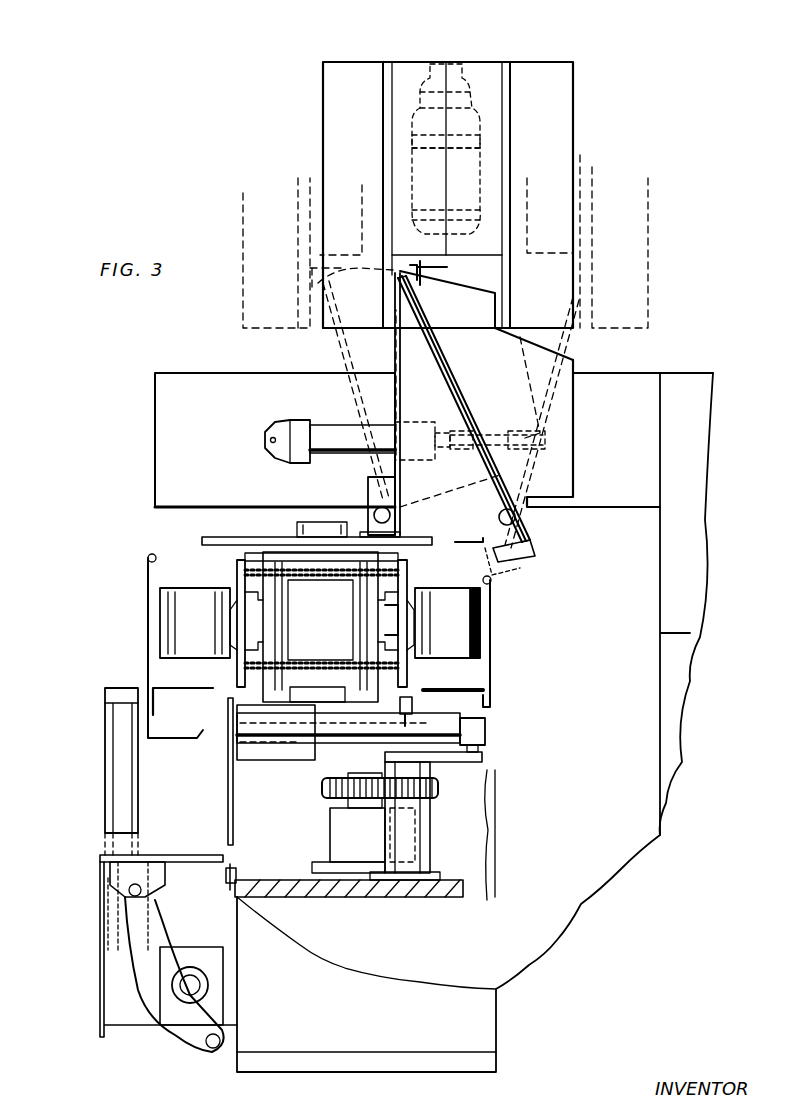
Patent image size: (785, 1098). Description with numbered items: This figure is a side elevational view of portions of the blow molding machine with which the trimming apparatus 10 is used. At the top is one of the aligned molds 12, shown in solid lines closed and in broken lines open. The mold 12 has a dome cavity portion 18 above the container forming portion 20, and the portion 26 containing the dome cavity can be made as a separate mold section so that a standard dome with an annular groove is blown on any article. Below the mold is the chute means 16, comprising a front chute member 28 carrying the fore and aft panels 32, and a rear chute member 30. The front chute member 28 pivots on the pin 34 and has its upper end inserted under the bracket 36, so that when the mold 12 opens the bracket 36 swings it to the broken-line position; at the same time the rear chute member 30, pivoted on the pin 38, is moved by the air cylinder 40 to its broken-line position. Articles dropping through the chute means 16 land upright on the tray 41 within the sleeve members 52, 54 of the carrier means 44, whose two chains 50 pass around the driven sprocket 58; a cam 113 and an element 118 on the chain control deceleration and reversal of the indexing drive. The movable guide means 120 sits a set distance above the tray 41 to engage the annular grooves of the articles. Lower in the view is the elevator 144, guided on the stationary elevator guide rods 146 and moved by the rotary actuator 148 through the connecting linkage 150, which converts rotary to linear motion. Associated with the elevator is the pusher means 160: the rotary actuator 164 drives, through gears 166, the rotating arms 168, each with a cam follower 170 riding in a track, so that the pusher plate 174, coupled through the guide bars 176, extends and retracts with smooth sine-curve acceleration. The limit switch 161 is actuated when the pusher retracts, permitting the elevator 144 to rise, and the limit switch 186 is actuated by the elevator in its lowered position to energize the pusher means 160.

The trimming apparatus 10 is at (102, 490).
The mold 12 is at (487, 62).
The chute means 16 is at (585, 360).
The dome cavity portion 18 is at (440, 66).
The container forming portion 20 is at (482, 135).
The mold portion 26 is at (395, 75).
The front chute member 28 is at (415, 392).
The rear chute member 30 is at (460, 385).
The fore and aft panels 32 is at (478, 345).
The pin 34 is at (368, 500).
The bracket 36 is at (447, 267).
The pin 38 is at (518, 520).
The air cylinder 40 is at (322, 428).
The tray 41 is at (190, 688).
The carrier means 44 is at (494, 616).
The chains 50 is at (405, 578).
The sleeve members 52 is at (484, 641).
The sleeve members 54 is at (165, 614).
The driven sprocket 58 is at (328, 636).
The cam 113 is at (288, 612).
The element 118 is at (400, 618).
The movable guide means 120 is at (244, 535).
The elevator 144 is at (178, 856).
The elevator guide rods 146 is at (115, 785).
The rotary actuator 148 is at (184, 952).
The connecting linkage 150 is at (162, 1012).
The pusher means 160 is at (235, 782).
The limit switch 161 is at (403, 722).
The rotary actuator 164 is at (340, 832).
The gears 166 is at (438, 788).
The rotating arms 168 is at (485, 758).
The cam follower 170 is at (488, 745).
The pusher plate 174 is at (230, 762).
The guide bars 176 is at (416, 728).
The limit switch 186 is at (240, 872).